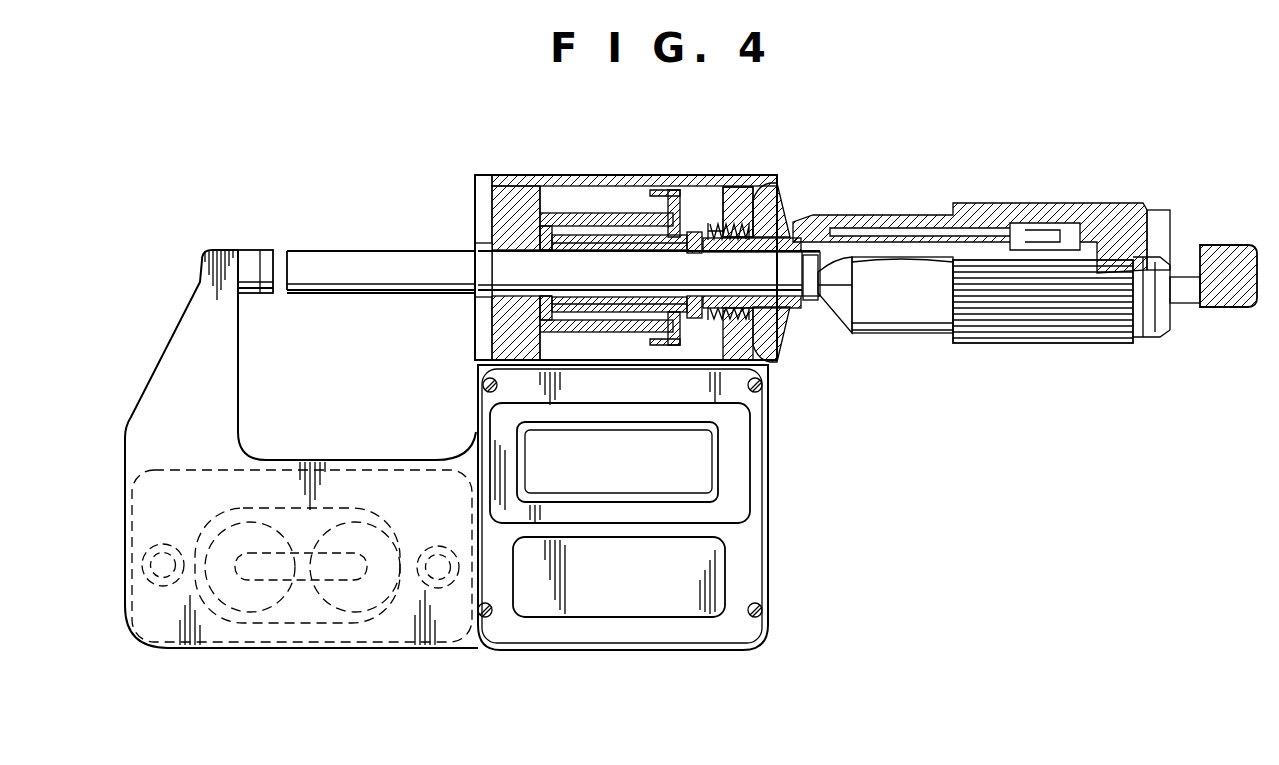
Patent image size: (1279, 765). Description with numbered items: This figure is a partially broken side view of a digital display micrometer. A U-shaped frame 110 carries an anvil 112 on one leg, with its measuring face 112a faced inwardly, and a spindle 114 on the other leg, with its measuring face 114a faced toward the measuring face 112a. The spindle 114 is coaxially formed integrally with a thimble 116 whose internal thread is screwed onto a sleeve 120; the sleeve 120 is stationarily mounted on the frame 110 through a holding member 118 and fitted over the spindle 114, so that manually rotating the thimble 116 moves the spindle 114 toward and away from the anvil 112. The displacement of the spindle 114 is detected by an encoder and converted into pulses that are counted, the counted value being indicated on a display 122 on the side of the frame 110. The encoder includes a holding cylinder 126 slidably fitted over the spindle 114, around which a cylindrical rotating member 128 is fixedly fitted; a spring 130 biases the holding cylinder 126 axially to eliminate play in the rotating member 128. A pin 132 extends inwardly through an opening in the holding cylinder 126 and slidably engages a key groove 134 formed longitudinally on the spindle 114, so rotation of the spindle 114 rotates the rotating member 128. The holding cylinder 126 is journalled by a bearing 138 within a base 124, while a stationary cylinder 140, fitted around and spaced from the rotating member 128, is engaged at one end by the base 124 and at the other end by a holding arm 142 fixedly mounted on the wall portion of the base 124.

The U-shaped frame 110 is at (470, 640).
The anvil 112 is at (248, 258).
The measuring face 112a is at (275, 262).
The spindle 114 is at (372, 294).
The measuring face 114a is at (285, 282).
The thimble 116 is at (883, 320).
The holding member 118 is at (775, 183).
The sleeve 120 is at (882, 238).
The display 122 is at (705, 455).
The base 124 is at (517, 223).
The holding cylinder 126 is at (587, 246).
The rotating member 128 is at (633, 236).
The spring 130 is at (789, 195).
The pin 132 is at (692, 232).
The key groove 134 is at (642, 252).
The bearing 138 is at (542, 220).
The stationary cylinder 140 is at (600, 213).
The holding arm 142 is at (675, 192).